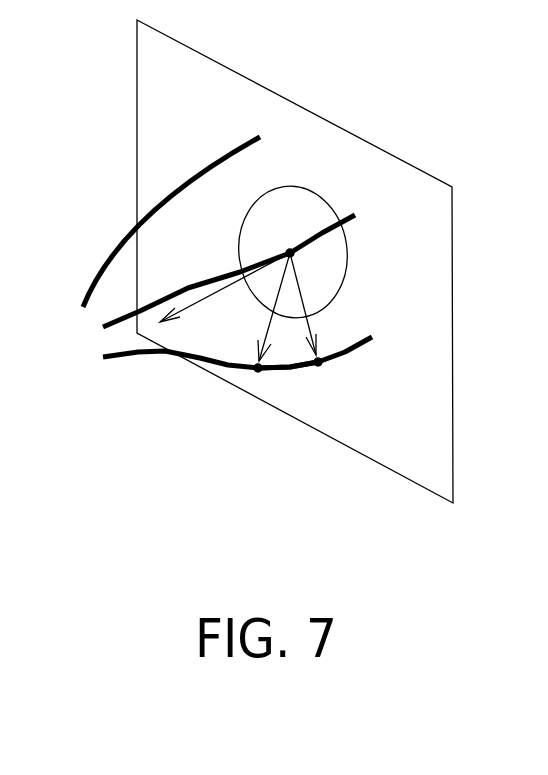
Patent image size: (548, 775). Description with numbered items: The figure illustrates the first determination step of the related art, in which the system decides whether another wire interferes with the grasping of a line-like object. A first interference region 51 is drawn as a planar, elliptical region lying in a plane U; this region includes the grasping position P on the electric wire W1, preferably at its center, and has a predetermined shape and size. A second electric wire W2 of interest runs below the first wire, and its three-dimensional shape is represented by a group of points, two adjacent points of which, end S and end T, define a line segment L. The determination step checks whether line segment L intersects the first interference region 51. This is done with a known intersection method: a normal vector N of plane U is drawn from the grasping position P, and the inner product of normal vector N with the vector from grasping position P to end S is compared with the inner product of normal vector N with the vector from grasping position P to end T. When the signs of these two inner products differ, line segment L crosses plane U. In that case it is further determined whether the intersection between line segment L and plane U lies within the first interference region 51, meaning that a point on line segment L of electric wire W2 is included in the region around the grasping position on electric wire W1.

The first interference region 51 is at (294, 188).
The plane U is at (443, 215).
The electric wire W1 is at (127, 311).
The electric wire W2 is at (138, 358).
The grasping position P is at (284, 241).
The normal vector N is at (207, 305).
The end of line segment S is at (258, 373).
The end of line segment T is at (317, 368).
The line segment L is at (284, 374).